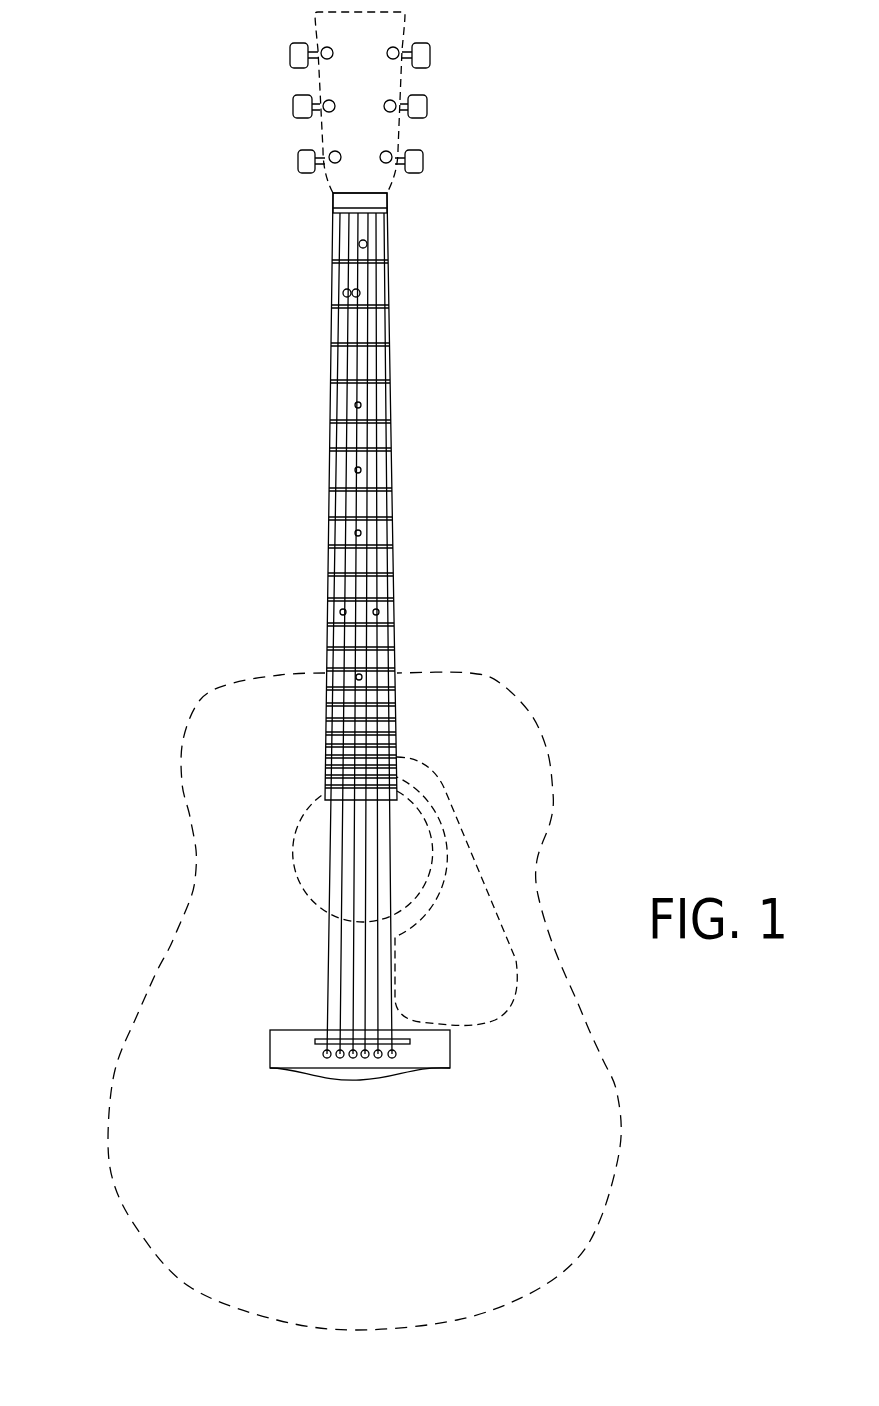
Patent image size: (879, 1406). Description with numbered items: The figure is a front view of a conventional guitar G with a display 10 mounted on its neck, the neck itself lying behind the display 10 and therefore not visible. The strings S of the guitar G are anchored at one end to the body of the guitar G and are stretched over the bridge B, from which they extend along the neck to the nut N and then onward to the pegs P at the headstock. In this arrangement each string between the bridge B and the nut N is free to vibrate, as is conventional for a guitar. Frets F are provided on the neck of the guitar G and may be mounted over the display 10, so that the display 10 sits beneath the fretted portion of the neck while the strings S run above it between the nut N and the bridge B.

The display 10 is at (325, 498).
The pegs P is at (297, 107).
The nut N is at (388, 209).
The frets F is at (388, 344).
The guitar G is at (223, 822).
The strings S is at (328, 888).
The bridge B is at (413, 1041).